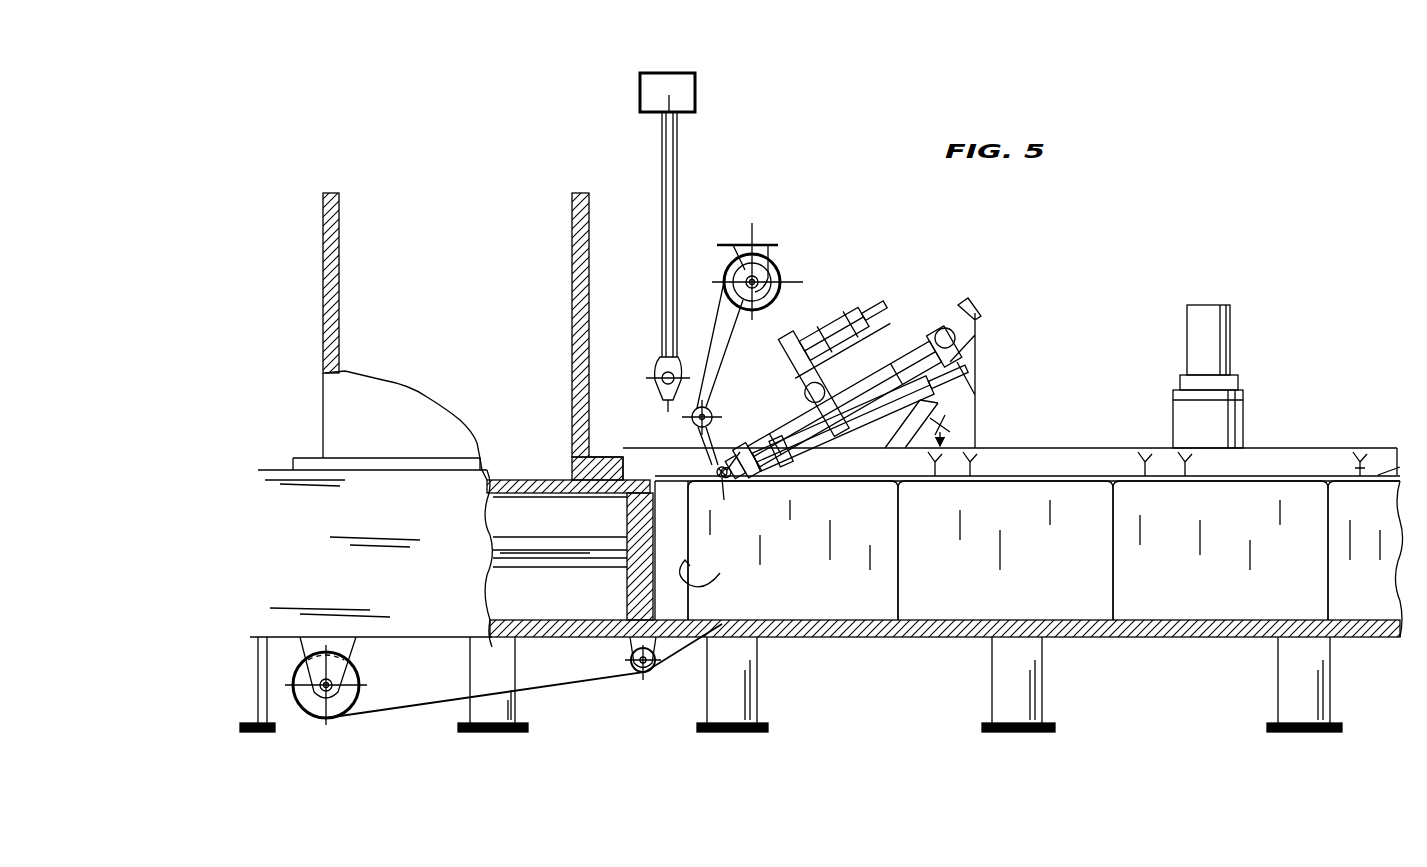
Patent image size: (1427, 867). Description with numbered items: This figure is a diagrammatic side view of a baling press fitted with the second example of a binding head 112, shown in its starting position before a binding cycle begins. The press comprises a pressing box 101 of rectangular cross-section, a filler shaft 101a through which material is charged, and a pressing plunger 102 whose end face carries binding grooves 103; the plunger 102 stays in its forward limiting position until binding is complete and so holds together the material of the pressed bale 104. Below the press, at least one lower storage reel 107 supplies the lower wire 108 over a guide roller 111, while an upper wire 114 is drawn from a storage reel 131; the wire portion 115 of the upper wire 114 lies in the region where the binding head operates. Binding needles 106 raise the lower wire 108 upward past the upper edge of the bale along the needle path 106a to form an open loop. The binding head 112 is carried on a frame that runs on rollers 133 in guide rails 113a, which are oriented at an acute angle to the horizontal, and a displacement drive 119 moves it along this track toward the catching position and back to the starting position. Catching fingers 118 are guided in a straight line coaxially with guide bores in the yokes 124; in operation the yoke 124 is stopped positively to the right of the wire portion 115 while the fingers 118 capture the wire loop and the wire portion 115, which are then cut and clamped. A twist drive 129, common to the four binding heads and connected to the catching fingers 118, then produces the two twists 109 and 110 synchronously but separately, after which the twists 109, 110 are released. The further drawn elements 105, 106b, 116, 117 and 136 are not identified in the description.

The pressing box 101 is at (294, 568).
The filler shaft 101a is at (400, 212).
The pressing plunger 102 is at (630, 585).
The binding grooves 103 is at (690, 633).
The pressed bale 104 is at (866, 598).
The conveyor table 105 is at (1078, 598).
The binding needle 106 is at (661, 223).
The path of the binding needle 106a is at (661, 402).
The nozzle head 106b is at (656, 375).
The lower storage reel 107 is at (320, 706).
The lower wire 108 is at (397, 713).
The twist 109 is at (1192, 465).
The twist 110 is at (1357, 462).
The guide roller 111 is at (628, 665).
The binding head 112 is at (840, 375).
The guide rails 113a is at (978, 310).
The upper wire 114 is at (718, 327).
The wire portion 115 is at (716, 469).
The link 116 is at (723, 480).
The guide pulley 117 is at (708, 409).
The catching finger 118 is at (822, 455).
The displacement drive 119 is at (866, 432).
The yoke 124 is at (768, 458).
The twist drive 129 is at (862, 332).
The storage reel 131 is at (733, 273).
The roller 133 is at (940, 330).
The hook 136 is at (715, 567).